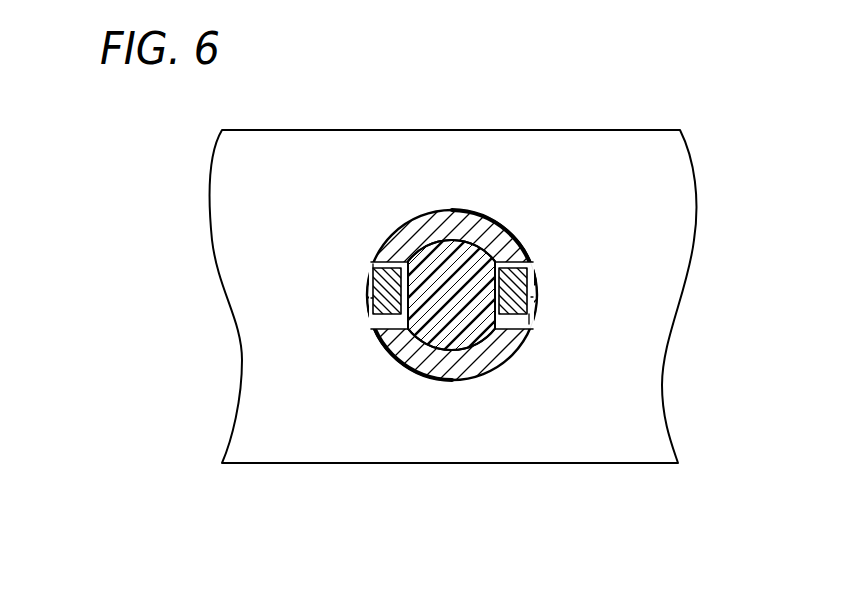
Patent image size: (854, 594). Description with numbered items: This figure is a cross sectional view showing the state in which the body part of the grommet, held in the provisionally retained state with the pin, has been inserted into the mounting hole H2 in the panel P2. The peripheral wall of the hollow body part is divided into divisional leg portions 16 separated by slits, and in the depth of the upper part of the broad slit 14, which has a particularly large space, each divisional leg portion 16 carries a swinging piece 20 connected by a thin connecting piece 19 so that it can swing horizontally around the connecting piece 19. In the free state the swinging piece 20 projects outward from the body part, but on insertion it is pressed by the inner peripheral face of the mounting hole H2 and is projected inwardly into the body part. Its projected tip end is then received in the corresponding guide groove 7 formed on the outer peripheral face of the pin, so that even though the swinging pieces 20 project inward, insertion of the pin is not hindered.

The guide groove 7 is at (367, 287).
The broad slit 14 is at (388, 330).
The divisional leg portion 16 is at (465, 228).
The connecting piece 19 is at (378, 262).
The swinging piece 20 is at (367, 298).
The mounting hole H2 is at (507, 362).
The panel P2 is at (608, 448).